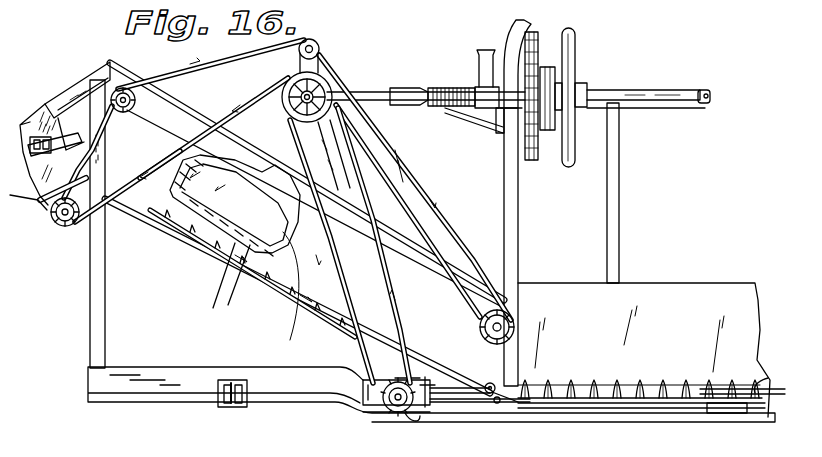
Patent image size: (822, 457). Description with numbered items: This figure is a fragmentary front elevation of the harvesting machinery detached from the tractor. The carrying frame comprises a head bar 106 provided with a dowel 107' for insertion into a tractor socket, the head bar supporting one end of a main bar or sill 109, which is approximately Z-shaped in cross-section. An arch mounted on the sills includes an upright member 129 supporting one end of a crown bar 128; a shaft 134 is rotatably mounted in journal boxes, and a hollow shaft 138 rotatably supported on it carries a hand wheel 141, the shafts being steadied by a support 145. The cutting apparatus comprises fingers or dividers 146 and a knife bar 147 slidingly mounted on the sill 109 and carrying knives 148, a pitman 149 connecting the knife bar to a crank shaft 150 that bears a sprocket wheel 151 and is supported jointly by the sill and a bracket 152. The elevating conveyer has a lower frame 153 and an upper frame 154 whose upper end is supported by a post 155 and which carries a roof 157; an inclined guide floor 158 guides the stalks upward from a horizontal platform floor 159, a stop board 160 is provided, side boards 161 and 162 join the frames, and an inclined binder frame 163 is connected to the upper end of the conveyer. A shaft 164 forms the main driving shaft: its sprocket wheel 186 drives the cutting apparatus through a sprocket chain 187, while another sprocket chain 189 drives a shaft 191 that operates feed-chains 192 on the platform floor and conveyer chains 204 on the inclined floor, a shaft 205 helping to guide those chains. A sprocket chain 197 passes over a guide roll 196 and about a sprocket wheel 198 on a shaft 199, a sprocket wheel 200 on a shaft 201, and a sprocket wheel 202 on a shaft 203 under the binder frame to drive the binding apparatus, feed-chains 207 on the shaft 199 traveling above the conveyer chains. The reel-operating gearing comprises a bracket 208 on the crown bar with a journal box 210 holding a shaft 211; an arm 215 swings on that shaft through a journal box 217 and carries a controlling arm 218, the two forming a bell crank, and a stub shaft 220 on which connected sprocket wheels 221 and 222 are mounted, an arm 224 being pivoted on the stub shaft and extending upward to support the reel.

The head bar 106 is at (225, 407).
The dowel 107' is at (256, 414).
The main bar or sill 109 is at (162, 402).
The crown bar 128 is at (490, 120).
The upright member 129 is at (518, 210).
The shaft 134 is at (707, 104).
The hollow shaft 138 is at (670, 90).
The hand wheel 141 is at (575, 60).
The support 145 is at (619, 195).
The fingers or dividers 146 is at (633, 404).
The knife bar 147 is at (507, 404).
The knives 148 is at (712, 414).
The pitman 149 is at (462, 403).
The crank shaft 150 is at (397, 414).
The sprocket wheel 151 is at (413, 425).
The bracket 152 is at (372, 407).
The lower frame 153 is at (150, 222).
The upper frame 154 is at (420, 262).
The post 155 is at (90, 322).
The roof 157 is at (116, 65).
The inclined guide floor 158 is at (222, 240).
The horizontal platform floor 159 is at (782, 391).
The stop board 160 is at (708, 292).
The side board 161 is at (283, 295).
The side board 162 is at (290, 326).
The binder frame 163 is at (50, 220).
The shaft 164 is at (268, 91).
The sprocket wheel 186 is at (333, 82).
The sprocket chain 187 is at (369, 255).
The sprocket chain 189 is at (398, 180).
The shaft 191 is at (494, 404).
The feed-chains 192 is at (768, 368).
The guide roll 196 is at (321, 46).
The sprocket chain 197 is at (205, 65).
The sprocket wheel 198 is at (476, 313).
The shaft 199 is at (480, 335).
The sprocket wheel 200 is at (104, 128).
The shaft 201 is at (135, 108).
The sprocket wheel 202 is at (108, 214).
The shaft 203 is at (58, 228).
The conveyer chains 204 is at (213, 308).
The shaft 205 is at (142, 171).
The feed-chains 207 is at (252, 160).
The bracket 208 is at (500, 133).
The journal box 210 is at (440, 88).
The shaft 211 is at (366, 92).
The arm 215 is at (478, 110).
The journal box 217 is at (406, 88).
The controlling arm 218 is at (480, 57).
The stub shaft 220 is at (582, 108).
The sprocket wheel 221 is at (531, 161).
The sprocket wheel 222 is at (550, 131).
The arm 224 is at (514, 22).